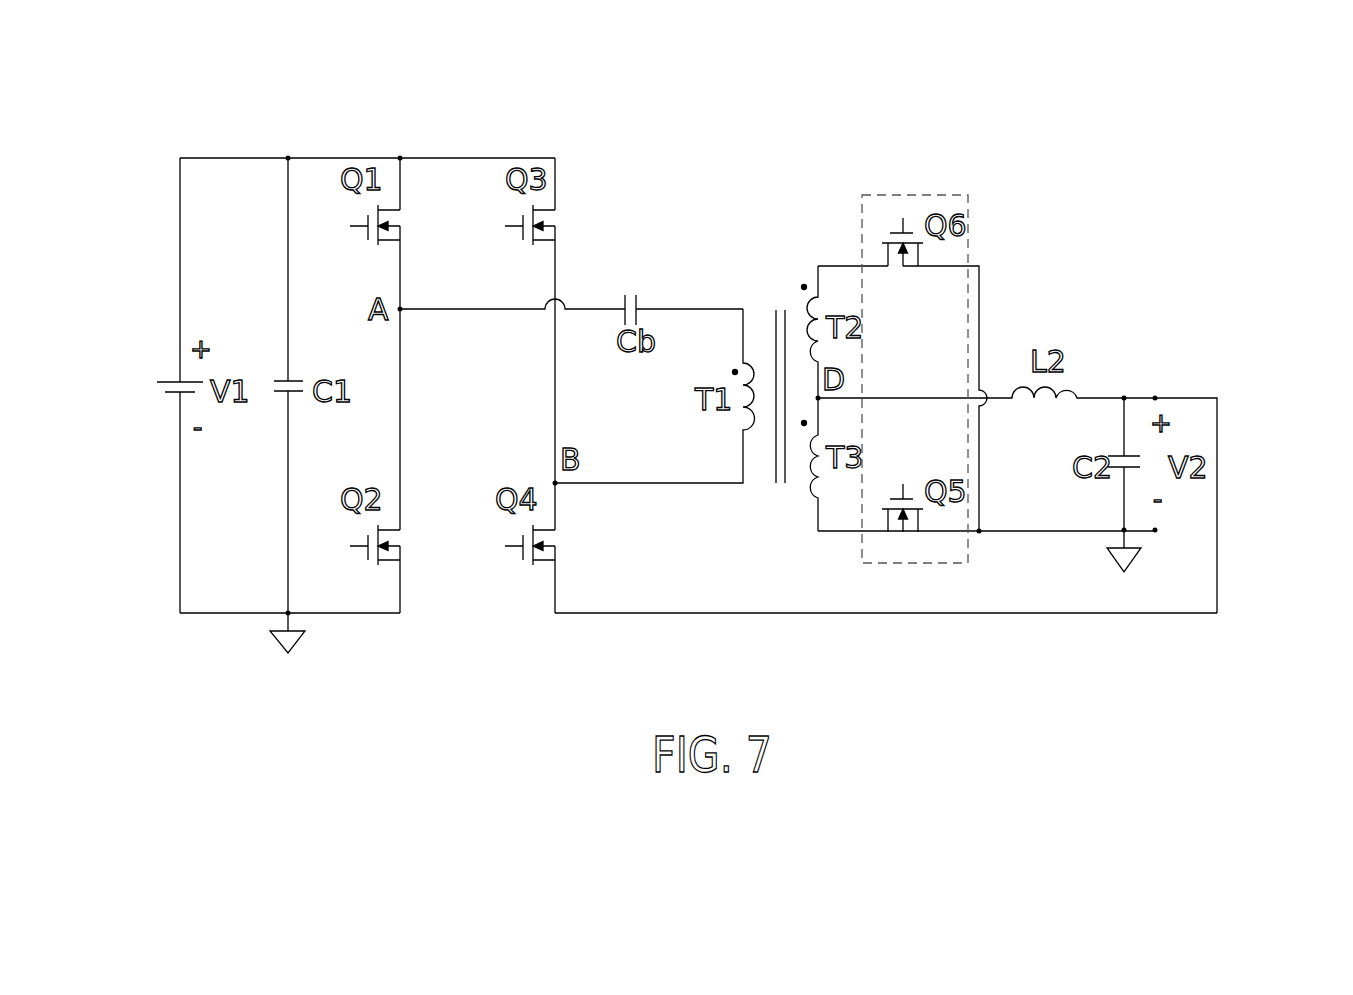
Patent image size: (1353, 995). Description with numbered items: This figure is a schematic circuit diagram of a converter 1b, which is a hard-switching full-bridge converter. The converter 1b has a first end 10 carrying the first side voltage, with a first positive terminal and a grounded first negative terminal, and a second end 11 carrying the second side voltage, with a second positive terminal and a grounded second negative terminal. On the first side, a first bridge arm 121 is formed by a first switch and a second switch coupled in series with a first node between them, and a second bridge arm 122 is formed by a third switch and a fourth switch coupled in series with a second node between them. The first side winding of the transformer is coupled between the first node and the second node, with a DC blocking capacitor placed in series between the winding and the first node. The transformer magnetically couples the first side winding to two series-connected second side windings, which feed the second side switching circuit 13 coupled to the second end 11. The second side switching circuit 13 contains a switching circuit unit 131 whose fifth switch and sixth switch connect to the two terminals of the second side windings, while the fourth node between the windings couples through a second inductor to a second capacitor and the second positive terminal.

The converter 1b is at (1351, 83).
The first end 10 is at (156, 190).
The second end 11 is at (1160, 358).
The first bridge arm 121 is at (372, 130).
The second bridge arm 122 is at (343, 76).
The second side switching circuit 13 is at (932, 165).
The switching circuit unit 131 is at (881, 194).